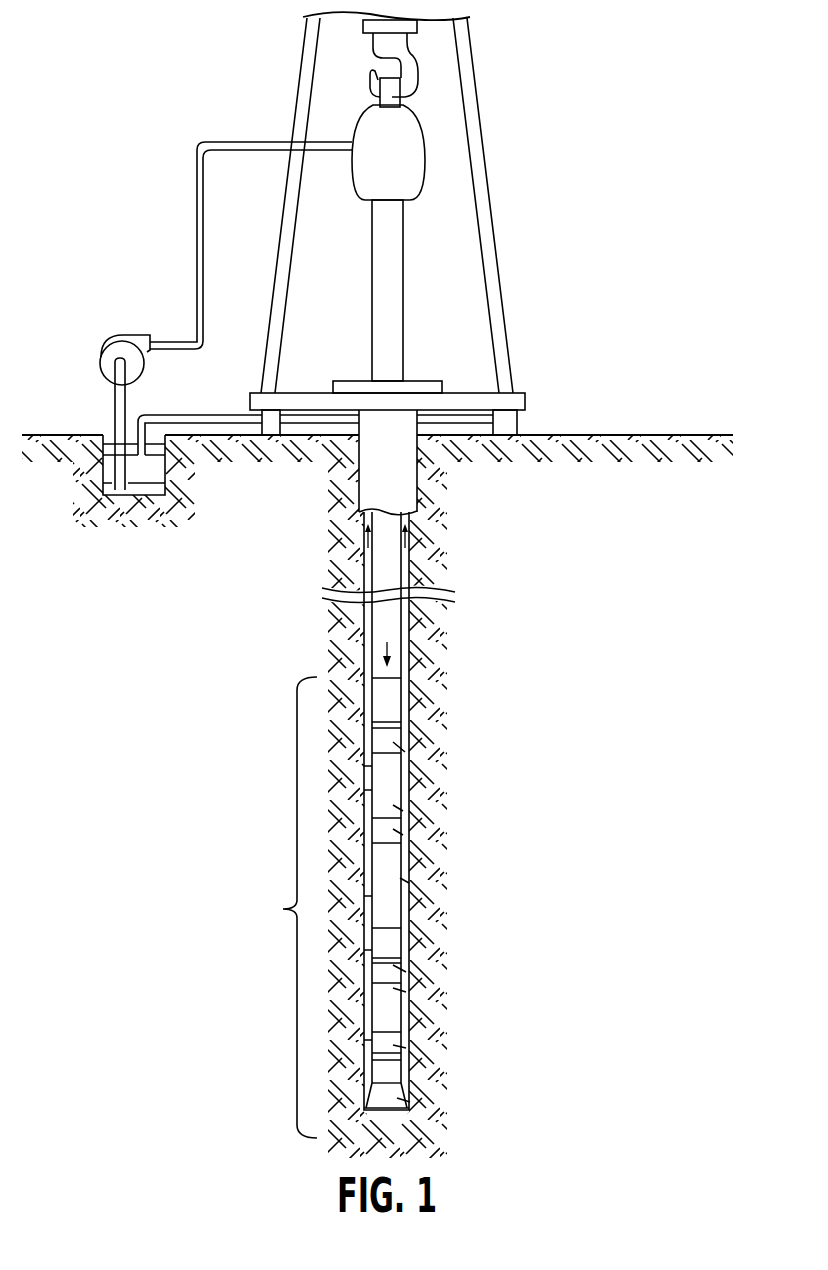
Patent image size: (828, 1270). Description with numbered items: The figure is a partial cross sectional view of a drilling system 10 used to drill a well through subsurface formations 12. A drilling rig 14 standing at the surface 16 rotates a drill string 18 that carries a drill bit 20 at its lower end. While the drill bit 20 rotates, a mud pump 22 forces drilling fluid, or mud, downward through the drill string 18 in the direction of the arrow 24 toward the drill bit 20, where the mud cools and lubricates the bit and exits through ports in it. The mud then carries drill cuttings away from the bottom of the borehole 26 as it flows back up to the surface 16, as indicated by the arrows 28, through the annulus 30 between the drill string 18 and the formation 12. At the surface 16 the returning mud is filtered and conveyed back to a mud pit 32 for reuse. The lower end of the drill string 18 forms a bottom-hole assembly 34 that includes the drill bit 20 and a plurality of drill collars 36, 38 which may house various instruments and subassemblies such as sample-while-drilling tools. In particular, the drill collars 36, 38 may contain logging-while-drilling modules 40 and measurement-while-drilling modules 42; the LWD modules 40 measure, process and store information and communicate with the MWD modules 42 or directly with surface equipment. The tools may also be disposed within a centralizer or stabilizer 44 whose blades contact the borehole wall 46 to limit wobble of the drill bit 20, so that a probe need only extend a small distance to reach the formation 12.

The drilling system 10 is at (628, 160).
The subsurface formations 12 is at (637, 876).
The drilling rig 14 is at (270, 117).
The surface 16 is at (600, 435).
The drill string 18 is at (406, 710).
The drill bit 20 is at (397, 1100).
The mud pump 22 is at (98, 360).
The arrow 24 is at (388, 645).
The borehole 26 is at (409, 663).
The arrows 28 is at (413, 540).
The annulus 30 is at (405, 727).
The mud pit 32 is at (147, 488).
The bottom-hole assembly 34 is at (284, 907).
The drill collar 36 is at (407, 800).
The drill collar 38 is at (405, 1003).
The logging-while-drilling module 40 is at (400, 812).
The measurement-while-drilling module 42 is at (400, 748).
The centralizer or stabilizer 44 is at (408, 1010).
The borehole wall 46 is at (408, 880).